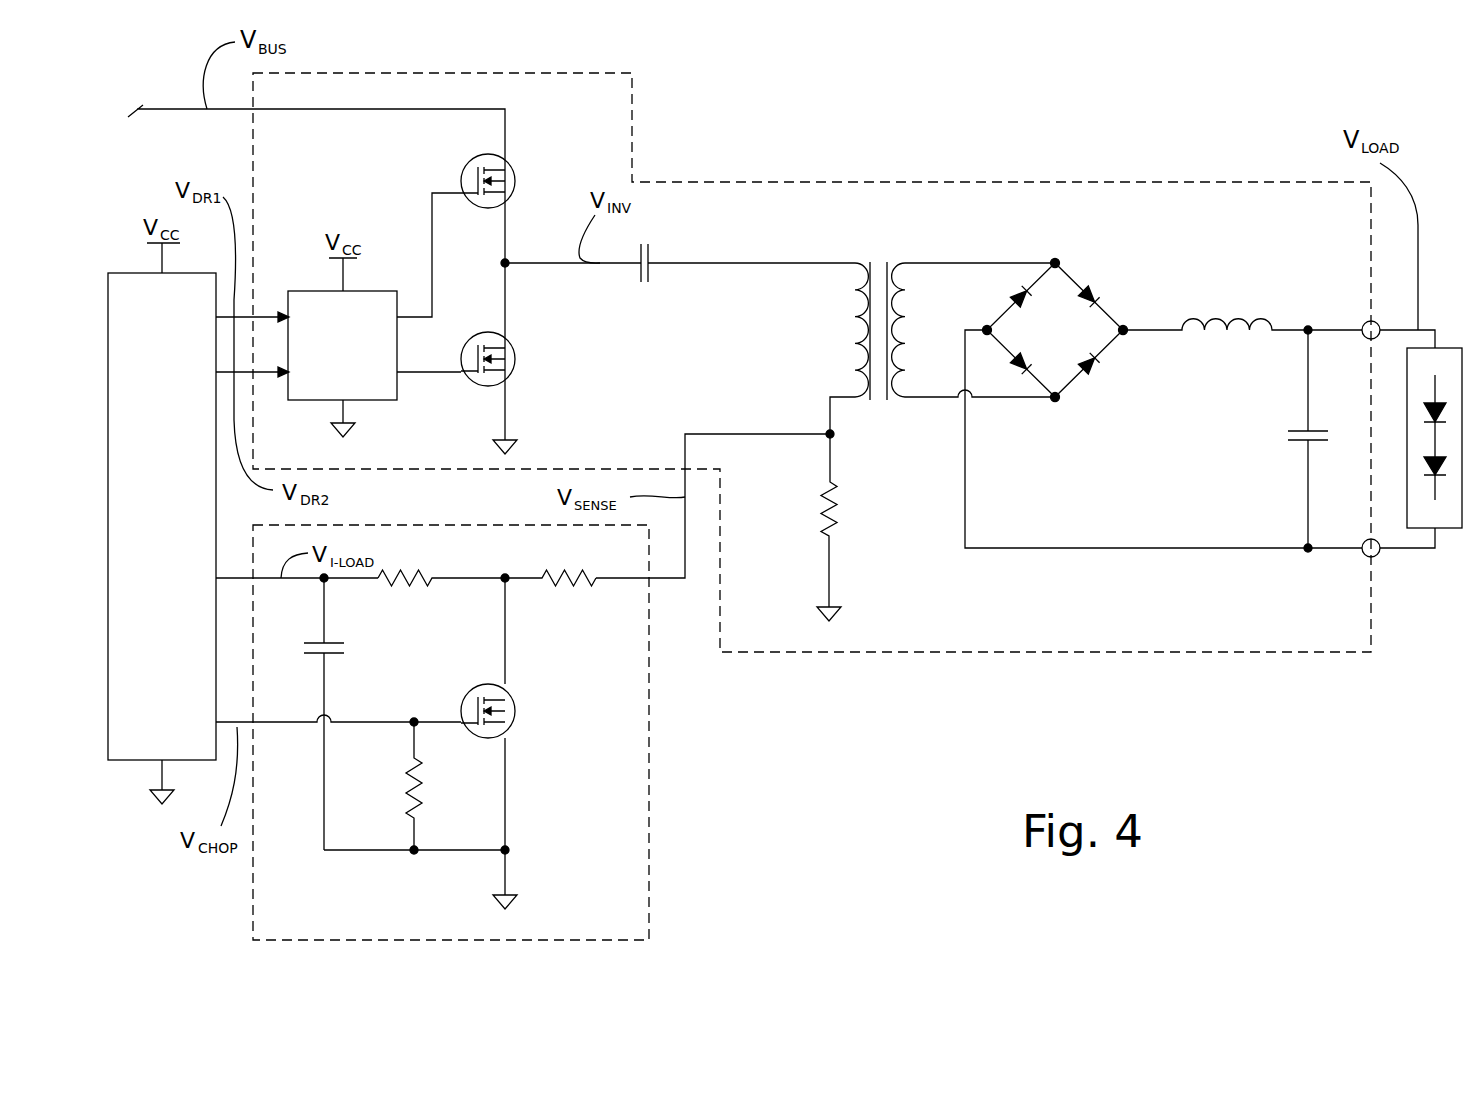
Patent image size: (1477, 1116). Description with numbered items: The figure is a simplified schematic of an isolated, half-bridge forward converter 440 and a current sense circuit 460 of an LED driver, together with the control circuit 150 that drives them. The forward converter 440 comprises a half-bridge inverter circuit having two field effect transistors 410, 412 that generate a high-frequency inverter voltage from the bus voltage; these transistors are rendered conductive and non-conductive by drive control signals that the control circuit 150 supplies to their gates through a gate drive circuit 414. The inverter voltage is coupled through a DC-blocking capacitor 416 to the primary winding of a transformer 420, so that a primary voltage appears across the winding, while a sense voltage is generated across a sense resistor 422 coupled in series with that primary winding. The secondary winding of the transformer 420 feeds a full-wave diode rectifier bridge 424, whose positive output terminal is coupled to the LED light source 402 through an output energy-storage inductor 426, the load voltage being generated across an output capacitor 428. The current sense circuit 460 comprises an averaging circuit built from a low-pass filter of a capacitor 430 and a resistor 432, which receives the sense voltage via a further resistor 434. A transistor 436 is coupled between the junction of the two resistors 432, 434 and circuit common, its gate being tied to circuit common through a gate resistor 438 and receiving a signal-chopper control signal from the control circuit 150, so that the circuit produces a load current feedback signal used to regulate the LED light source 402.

The control circuit 150 is at (181, 581).
The LED light source 402 is at (1447, 510).
The field effect transistor Q410 410 is at (468, 163).
The field effect transistor Q412 412 is at (481, 387).
The gate drive circuit 414 is at (367, 300).
The DC-blocking capacitor C416 416 is at (675, 242).
The transformer 420 is at (880, 250).
The sense resistor R422 422 is at (842, 512).
The full-wave diode rectifier bridge 424 is at (1046, 418).
The output energy-storage inductor L426 426 is at (1217, 340).
The output capacitor C428 428 is at (1298, 443).
The capacitor C430 430 is at (330, 656).
The resistor R432 432 is at (405, 589).
The resistor R434 434 is at (562, 589).
The transistor Q436 436 is at (515, 702).
The resistor R438 438 is at (407, 783).
The isolated half-bridge forward converter 440 is at (632, 112).
The current sense circuit 460 is at (649, 775).